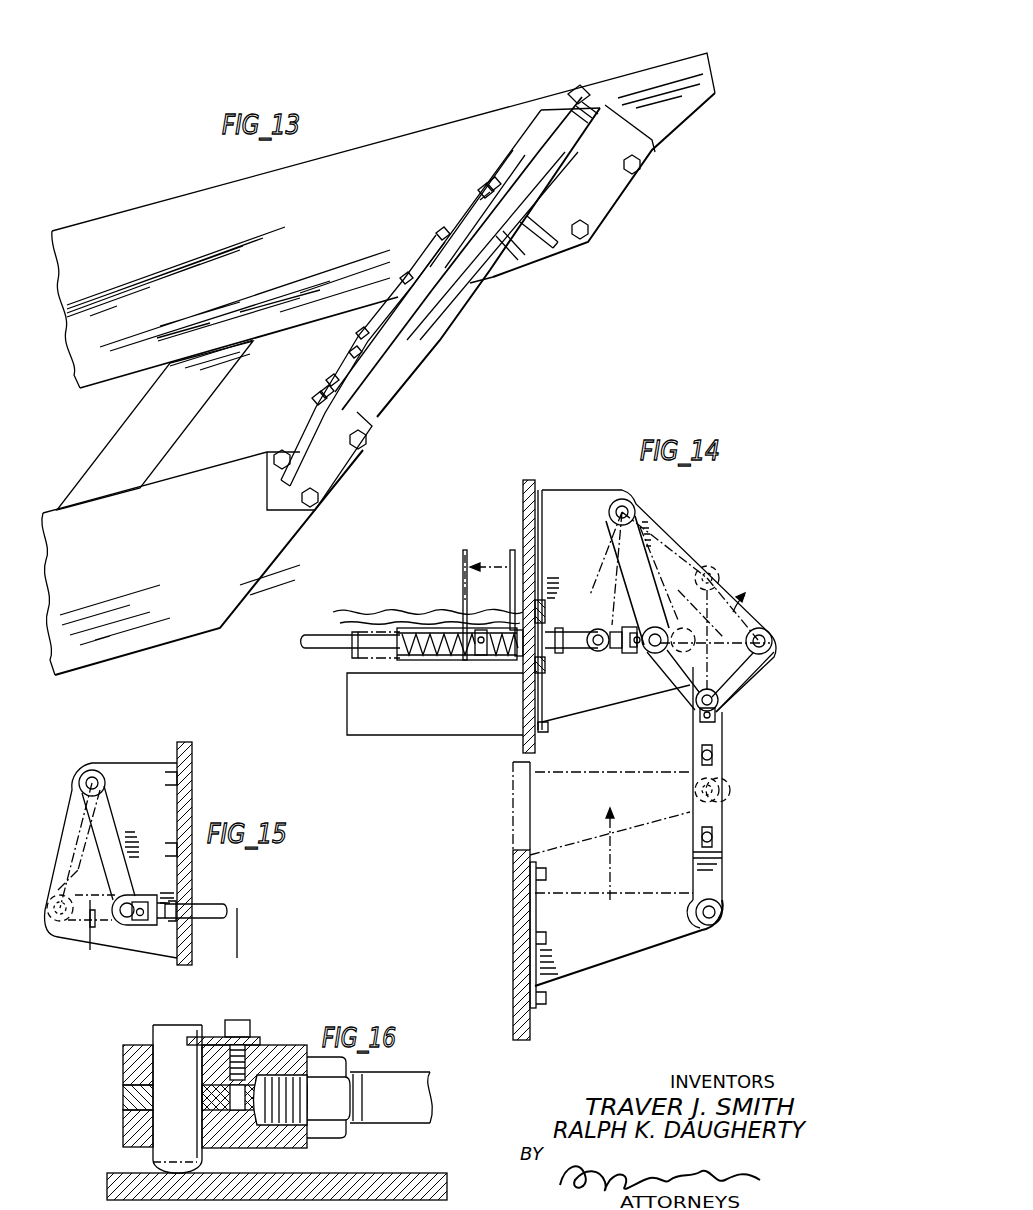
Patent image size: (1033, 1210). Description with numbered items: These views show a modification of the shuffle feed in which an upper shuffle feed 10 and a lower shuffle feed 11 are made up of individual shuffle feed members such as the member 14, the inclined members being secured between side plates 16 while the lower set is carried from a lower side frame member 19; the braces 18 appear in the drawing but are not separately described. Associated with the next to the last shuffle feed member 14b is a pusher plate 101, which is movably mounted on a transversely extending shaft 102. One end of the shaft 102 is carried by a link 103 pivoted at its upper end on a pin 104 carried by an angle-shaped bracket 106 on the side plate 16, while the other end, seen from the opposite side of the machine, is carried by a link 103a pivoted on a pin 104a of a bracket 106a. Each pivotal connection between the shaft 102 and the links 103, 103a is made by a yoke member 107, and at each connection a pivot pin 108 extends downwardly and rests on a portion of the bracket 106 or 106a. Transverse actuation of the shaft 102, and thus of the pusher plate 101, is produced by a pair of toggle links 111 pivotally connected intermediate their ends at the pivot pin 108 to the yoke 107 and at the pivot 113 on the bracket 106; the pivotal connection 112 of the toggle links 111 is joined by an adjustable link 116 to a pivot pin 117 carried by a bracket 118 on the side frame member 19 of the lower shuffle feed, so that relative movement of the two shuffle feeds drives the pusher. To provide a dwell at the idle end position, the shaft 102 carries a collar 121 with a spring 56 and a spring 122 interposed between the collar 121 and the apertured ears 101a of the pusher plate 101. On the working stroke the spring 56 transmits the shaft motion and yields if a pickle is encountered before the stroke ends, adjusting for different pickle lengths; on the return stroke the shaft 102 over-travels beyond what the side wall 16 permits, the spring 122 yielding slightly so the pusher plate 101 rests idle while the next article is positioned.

In FIG. 13, the upper shuffle feed 10 is at (462, 112).
In FIG. 14, the upper shuffle feed 10 is at (518, 507).
In FIG. 15, the upper shuffle feed 10 is at (195, 785).
In FIG. 13, the lower shuffle feed 11 is at (300, 528).
In FIG. 14, the lower shuffle feed 11 is at (512, 895).
In FIG. 13, the shuffle feed member 14 is at (592, 37).
In FIG. 14, the next to the last shuffle feed member 14b is at (405, 722).
In FIG. 13, the side plate 16 is at (370, 229).
In FIG. 14, the side plate 16 is at (528, 481).
In FIG. 15, the side plate 16 is at (172, 862).
In FIG. 13, the brace bar 18 is at (208, 365).
In FIG. 13, the side frame member 19 is at (228, 574).
In FIG. 14, the side frame member 19 is at (512, 940).
In FIG. 14, the spring 56 is at (440, 661).
In FIG. 14, the pusher plate 101 is at (512, 582).
In FIG. 14, the apertured ears 101a is at (400, 660).
In FIG. 14, the shaft 102 is at (320, 650).
In FIG. 15, the shaft 102 is at (208, 905).
In FIG. 16, the shaft 102 is at (395, 1083).
In FIG. 13, the link 103 is at (543, 155).
In FIG. 14, the link 103 is at (644, 557).
In FIG. 15, the link 103a is at (108, 822).
In FIG. 16, the link 103a is at (138, 1096).
In FIG. 13, the pin 104 is at (572, 97).
In FIG. 14, the pin 104 is at (632, 509).
In FIG. 15, the pin 104a is at (92, 778).
In FIG. 13, the angle-shaped bracket 106 is at (600, 207).
In FIG. 14, the angle-shaped bracket 106 is at (588, 500).
In FIG. 15, the bracket 106a is at (147, 770).
In FIG. 16, the bracket 106a is at (330, 1185).
In FIG. 16, the yoke member 107 is at (278, 1050).
In FIG. 14, the pivot pin 108 is at (658, 627).
In FIG. 15, the pivot pin 108 is at (127, 922).
In FIG. 16, the pivot pin 108 is at (168, 1040).
In FIG. 13, the toggle links 111 is at (500, 238).
In FIG. 14, the toggle links 111 is at (687, 690).
In FIG. 13, the pivotal connection 112 is at (440, 236).
In FIG. 14, the pivotal connection 112 is at (725, 718).
In FIG. 13, the pivot 113 is at (484, 188).
In FIG. 14, the pivot 113 is at (765, 628).
In FIG. 13, the adjustable link 116 is at (352, 378).
In FIG. 14, the adjustable link 116 is at (712, 868).
In FIG. 13, the pivot pin 117 is at (320, 405).
In FIG. 14, the pivot pin 117 is at (722, 910).
In FIG. 13, the bracket 118 is at (315, 440).
In FIG. 14, the bracket 118 is at (660, 930).
In FIG. 14, the collar 121 is at (480, 658).
In FIG. 14, the spring 122 is at (520, 659).